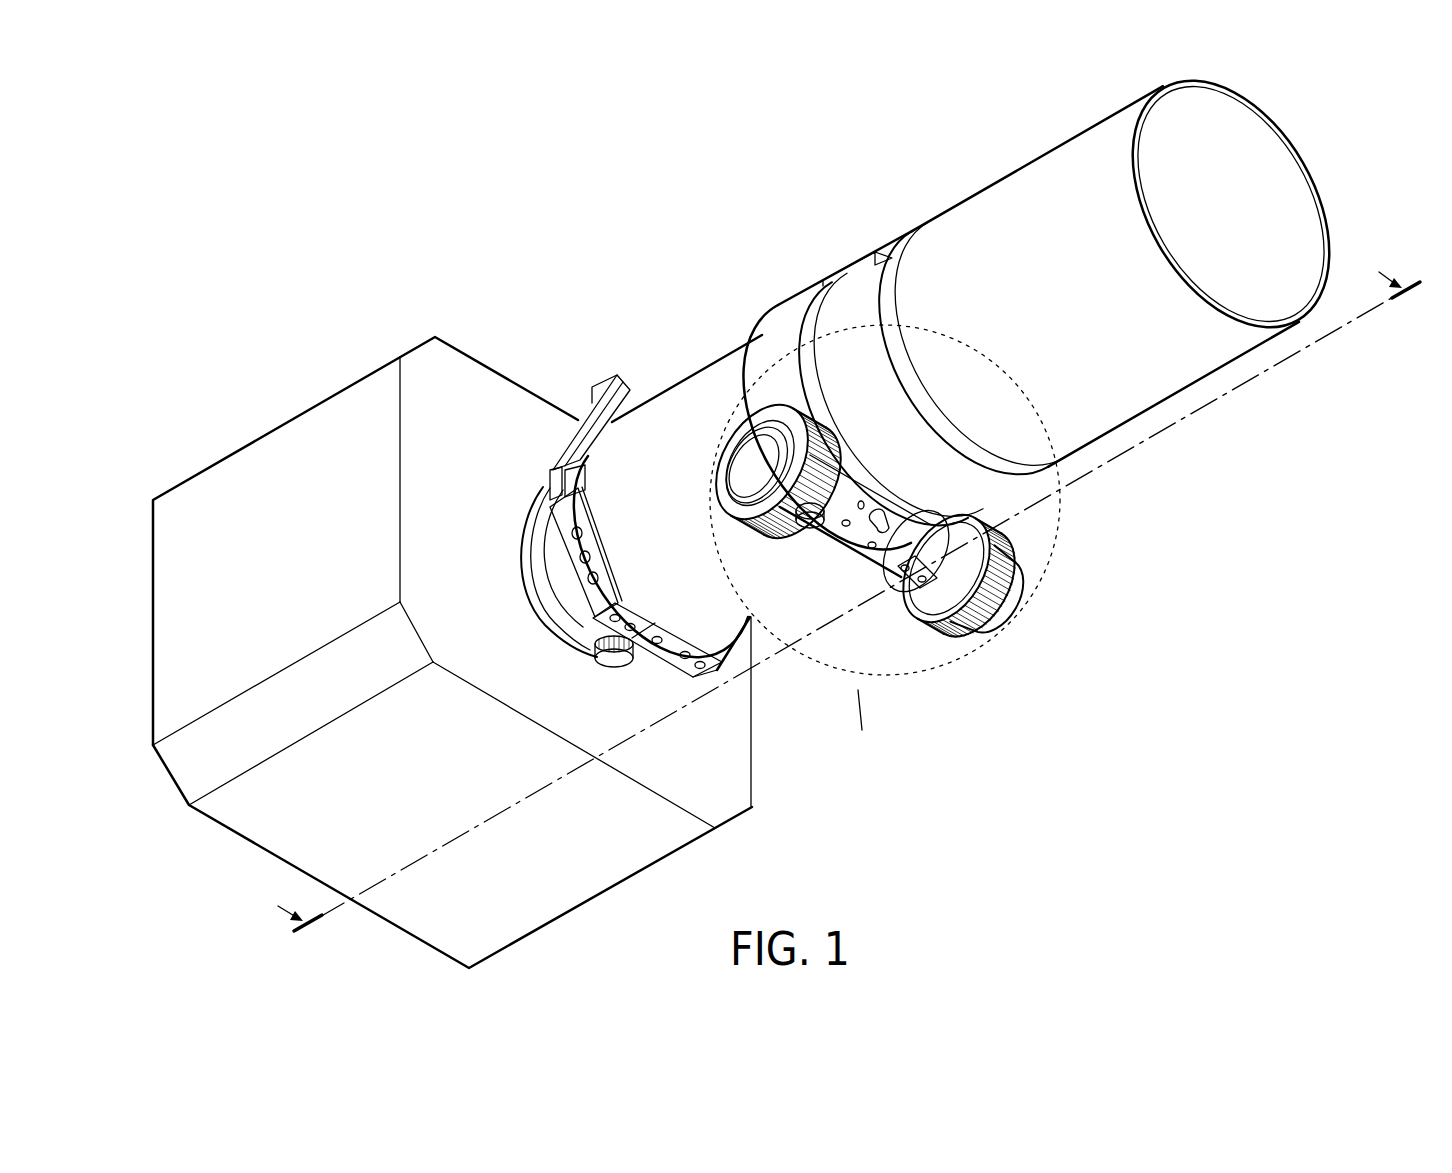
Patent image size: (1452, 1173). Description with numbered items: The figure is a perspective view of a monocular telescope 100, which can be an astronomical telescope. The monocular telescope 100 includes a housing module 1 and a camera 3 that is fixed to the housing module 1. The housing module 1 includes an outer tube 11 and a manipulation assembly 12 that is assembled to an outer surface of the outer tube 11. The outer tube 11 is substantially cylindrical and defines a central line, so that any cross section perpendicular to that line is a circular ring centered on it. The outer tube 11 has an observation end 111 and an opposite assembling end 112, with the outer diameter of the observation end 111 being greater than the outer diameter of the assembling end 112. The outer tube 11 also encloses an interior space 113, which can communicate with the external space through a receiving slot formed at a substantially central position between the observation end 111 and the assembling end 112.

The monocular telescope 100 is at (200, 108).
The housing module 1 is at (905, 361).
The outer tube 11 is at (972, 361).
The observation end 111 is at (1261, 122).
The interior space 113 is at (1271, 211).
The manipulation assembly 12 is at (1022, 551).
The assembling end 112 is at (540, 569).
The camera 3 is at (609, 886).